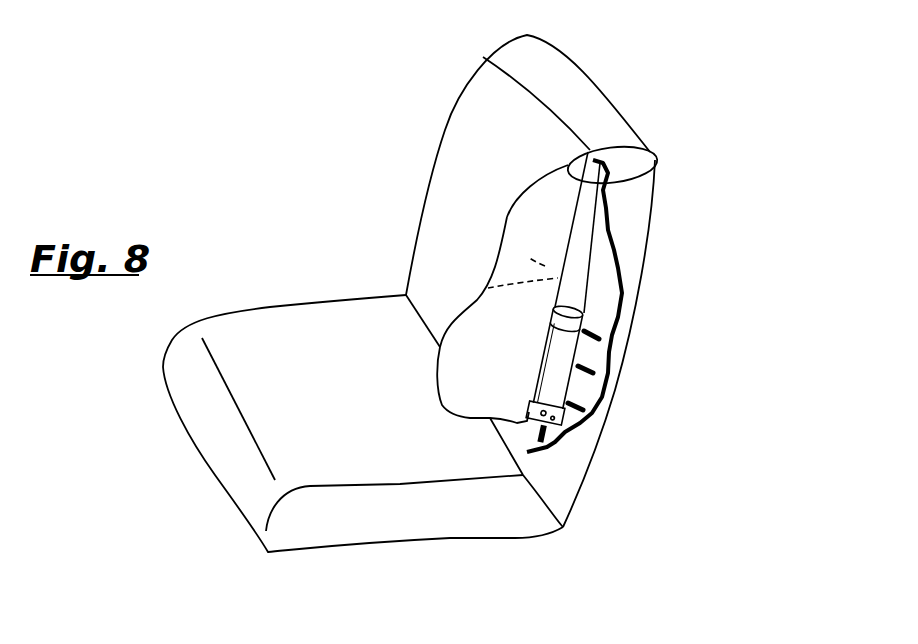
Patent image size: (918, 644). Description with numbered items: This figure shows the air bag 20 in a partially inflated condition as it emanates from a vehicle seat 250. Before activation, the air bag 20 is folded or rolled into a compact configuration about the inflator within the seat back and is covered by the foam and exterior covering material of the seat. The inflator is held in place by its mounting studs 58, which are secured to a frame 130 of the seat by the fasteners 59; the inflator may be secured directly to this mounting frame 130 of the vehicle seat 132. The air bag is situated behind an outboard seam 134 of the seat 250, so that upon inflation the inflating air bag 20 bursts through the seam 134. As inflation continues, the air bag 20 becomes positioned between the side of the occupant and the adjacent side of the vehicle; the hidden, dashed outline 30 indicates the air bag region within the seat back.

The vehicle seat 250 is at (477, 152).
The air bag 20 is at (513, 237).
The outboard seam 134 is at (655, 158).
The vehicle seat 132 is at (613, 242).
The airbag 30 is at (545, 266).
The mounting studs 58 is at (583, 316).
The frame 130 is at (560, 390).
The fasteners 59 is at (557, 437).